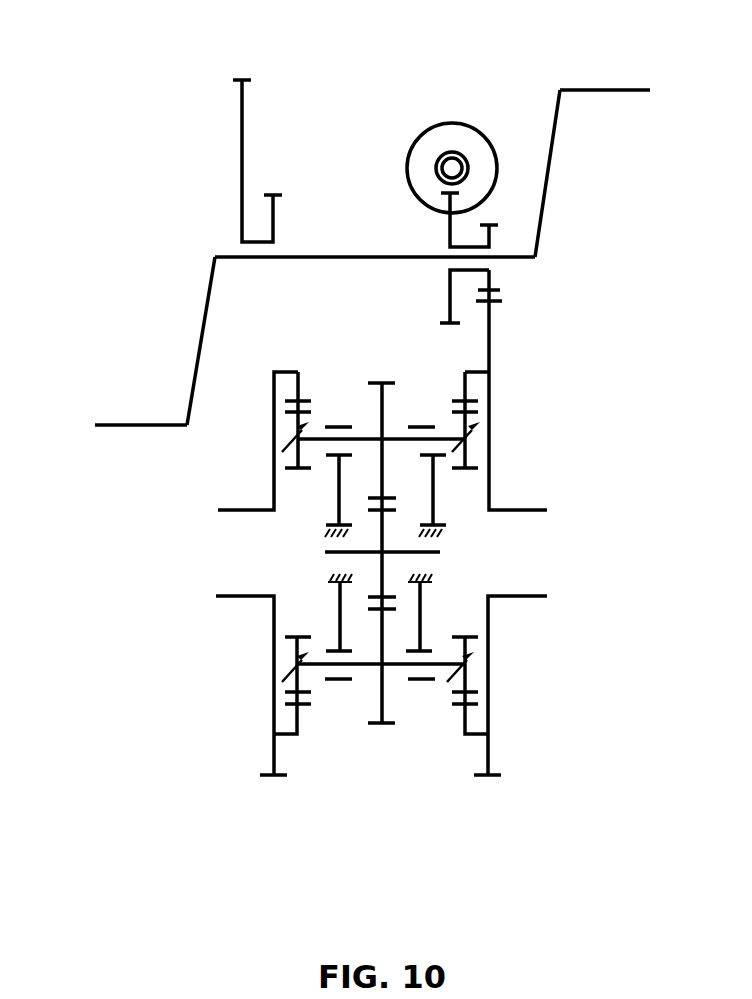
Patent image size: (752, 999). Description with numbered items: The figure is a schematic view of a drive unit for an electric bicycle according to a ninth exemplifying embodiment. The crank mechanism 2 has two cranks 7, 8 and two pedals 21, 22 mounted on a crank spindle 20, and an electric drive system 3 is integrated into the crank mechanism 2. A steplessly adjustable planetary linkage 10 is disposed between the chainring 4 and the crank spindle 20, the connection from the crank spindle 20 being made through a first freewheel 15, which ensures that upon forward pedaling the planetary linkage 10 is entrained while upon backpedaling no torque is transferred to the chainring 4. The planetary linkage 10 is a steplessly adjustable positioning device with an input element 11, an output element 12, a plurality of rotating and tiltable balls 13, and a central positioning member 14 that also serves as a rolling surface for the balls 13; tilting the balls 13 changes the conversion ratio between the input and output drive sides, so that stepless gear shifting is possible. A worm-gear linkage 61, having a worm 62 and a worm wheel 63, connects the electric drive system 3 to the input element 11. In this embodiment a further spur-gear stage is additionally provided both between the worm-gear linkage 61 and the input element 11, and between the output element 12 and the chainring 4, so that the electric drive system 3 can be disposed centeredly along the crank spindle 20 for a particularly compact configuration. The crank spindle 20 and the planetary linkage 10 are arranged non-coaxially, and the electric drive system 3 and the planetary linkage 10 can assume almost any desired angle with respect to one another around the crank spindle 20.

The crank mechanism 2 is at (376, 260).
The electric drive system 3 is at (430, 125).
The chainring 4 is at (242, 120).
The crank 7 is at (551, 160).
The crank 8 is at (205, 318).
The steplessly adjustable planetary linkage 10 is at (493, 794).
The input element 11 is at (465, 382).
The output element 12 is at (300, 378).
The balls 13 is at (366, 440).
The central positioning member 14 is at (382, 545).
The first freewheel 15 is at (490, 265).
The crank spindle 20 is at (313, 257).
The pedal 21 is at (617, 90).
The pedal 22 is at (121, 430).
The worm-gear linkage 61 is at (460, 153).
The worm 62 is at (441, 168).
The worm wheel 63 is at (449, 228).